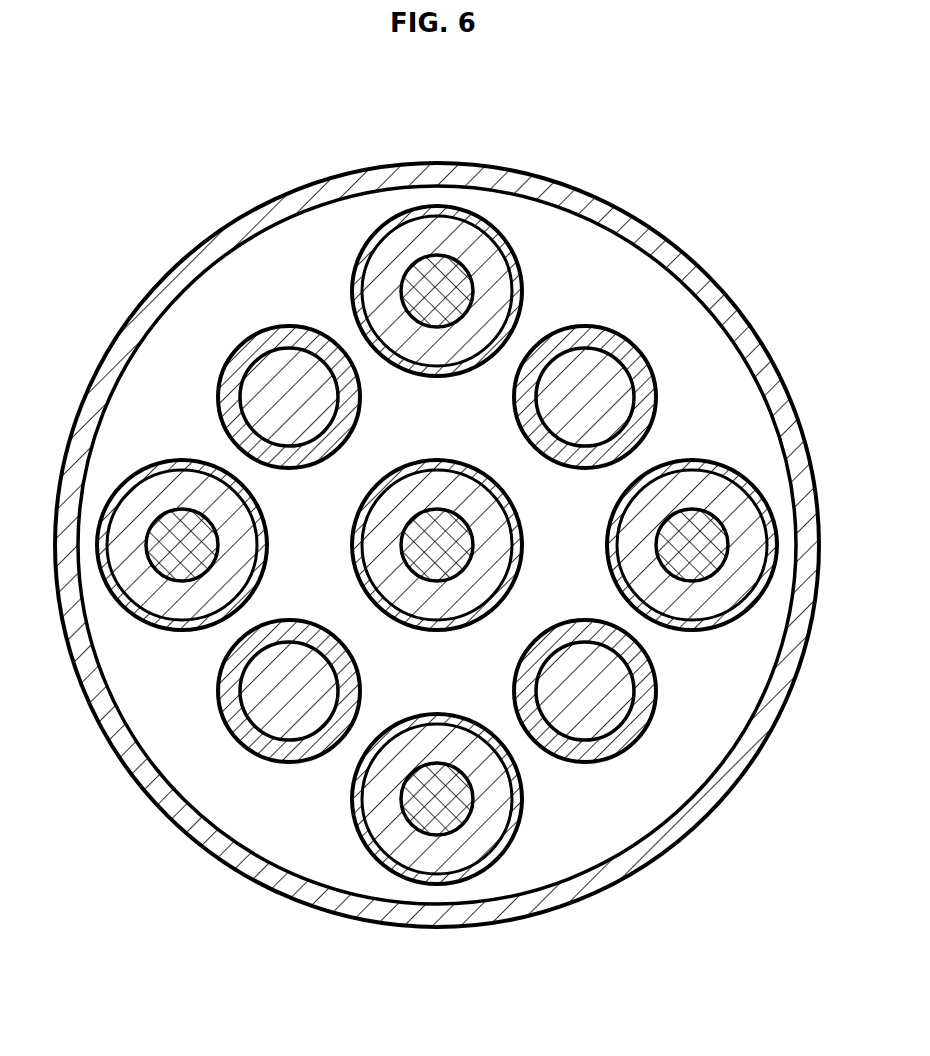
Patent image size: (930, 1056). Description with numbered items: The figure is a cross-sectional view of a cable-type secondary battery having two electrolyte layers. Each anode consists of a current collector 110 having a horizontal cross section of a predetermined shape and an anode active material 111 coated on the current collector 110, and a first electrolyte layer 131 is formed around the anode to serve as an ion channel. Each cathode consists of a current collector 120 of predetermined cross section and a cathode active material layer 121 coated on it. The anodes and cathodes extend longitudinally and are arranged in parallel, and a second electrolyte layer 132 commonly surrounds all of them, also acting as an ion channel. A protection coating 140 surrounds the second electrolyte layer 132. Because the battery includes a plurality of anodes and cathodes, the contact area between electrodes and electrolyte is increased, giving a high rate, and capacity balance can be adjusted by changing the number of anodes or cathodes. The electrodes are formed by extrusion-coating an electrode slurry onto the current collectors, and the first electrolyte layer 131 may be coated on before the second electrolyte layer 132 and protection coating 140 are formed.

The current collector 110 is at (455, 234).
The anode active material 111 is at (418, 272).
The first electrolyte layer 131 is at (494, 224).
The current collector 120 is at (211, 328).
The cathode active material layer 121 is at (263, 383).
The second electrolyte layer 132 is at (686, 315).
The protection coating 140 is at (668, 255).